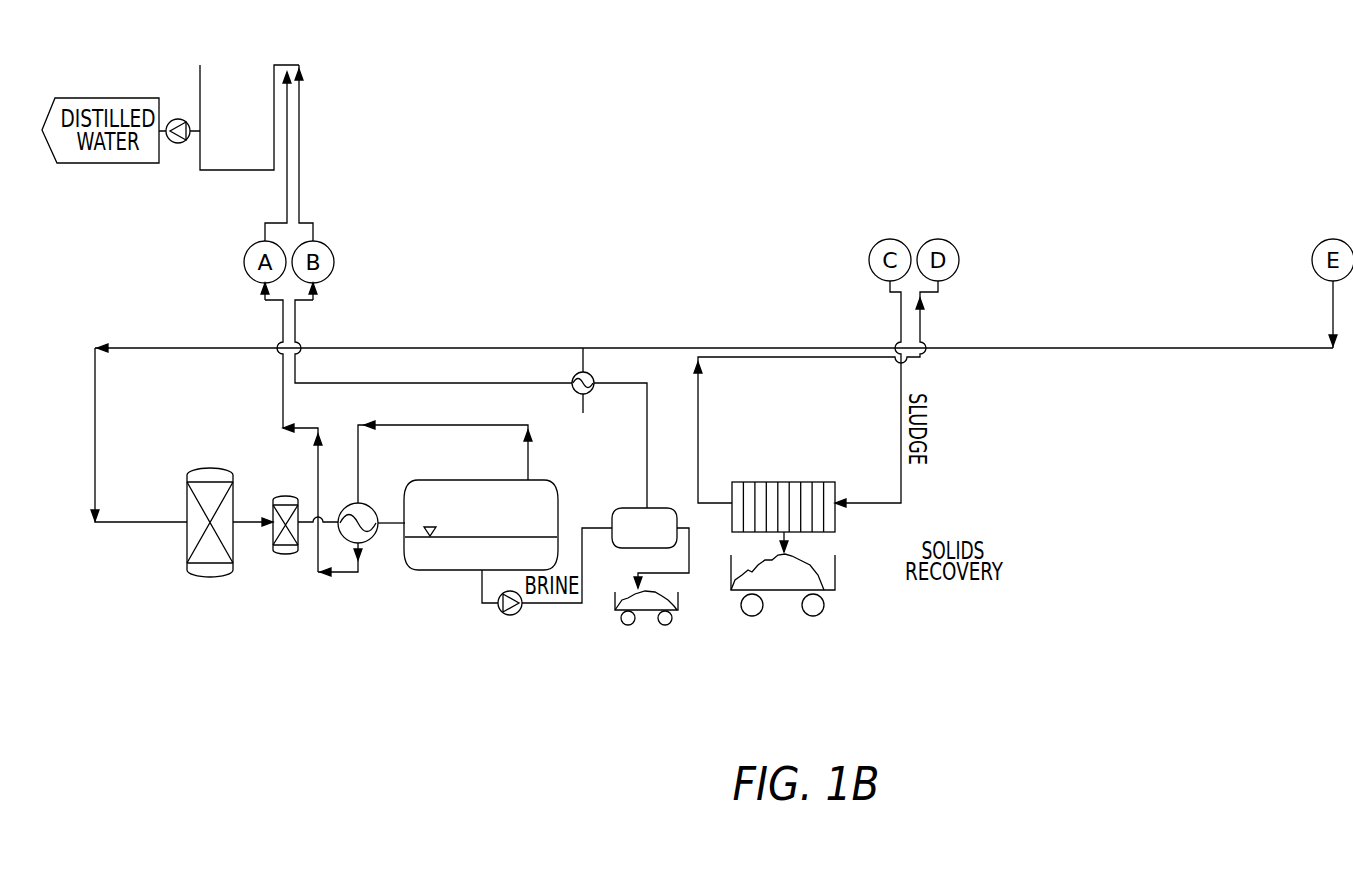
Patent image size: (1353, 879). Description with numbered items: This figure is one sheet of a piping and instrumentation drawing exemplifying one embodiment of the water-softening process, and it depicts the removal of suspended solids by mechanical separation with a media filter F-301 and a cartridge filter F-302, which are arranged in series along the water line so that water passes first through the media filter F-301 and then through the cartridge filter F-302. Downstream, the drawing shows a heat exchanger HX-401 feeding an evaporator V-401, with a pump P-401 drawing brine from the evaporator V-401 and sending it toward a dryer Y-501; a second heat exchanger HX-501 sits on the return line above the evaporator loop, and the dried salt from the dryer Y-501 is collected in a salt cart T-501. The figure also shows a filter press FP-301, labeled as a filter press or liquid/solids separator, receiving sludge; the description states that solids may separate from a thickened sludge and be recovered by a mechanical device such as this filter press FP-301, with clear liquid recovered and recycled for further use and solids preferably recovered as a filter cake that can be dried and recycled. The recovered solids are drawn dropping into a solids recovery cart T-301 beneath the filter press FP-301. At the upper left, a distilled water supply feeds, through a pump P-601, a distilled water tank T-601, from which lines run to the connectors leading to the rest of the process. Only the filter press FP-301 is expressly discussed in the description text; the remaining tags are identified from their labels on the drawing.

The distilled water pump P-601 is at (176, 160).
The distilled water tank T-601 is at (248, 119).
The media filter F-301 is at (194, 515).
The cartridge filter F-302 is at (272, 512).
The heat exchanger HX-401 is at (421, 515).
The evaporator V-401 is at (481, 545).
The brine pump P-401 is at (510, 621).
The heat exchanger HX-501 is at (606, 384).
The dryer Y-501 is at (628, 510).
The salt cart T-501 is at (671, 616).
The filter press FP-301 is at (795, 462).
The solids recovery cart T-301 is at (808, 587).